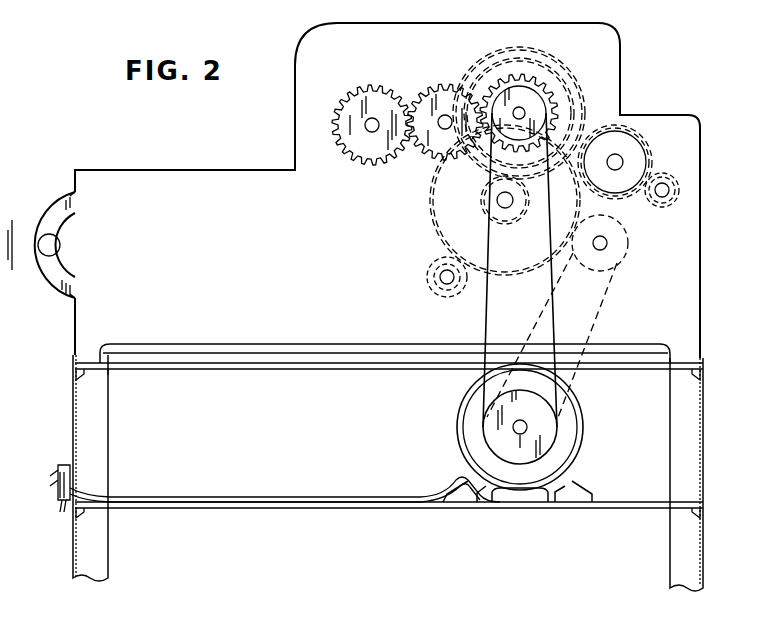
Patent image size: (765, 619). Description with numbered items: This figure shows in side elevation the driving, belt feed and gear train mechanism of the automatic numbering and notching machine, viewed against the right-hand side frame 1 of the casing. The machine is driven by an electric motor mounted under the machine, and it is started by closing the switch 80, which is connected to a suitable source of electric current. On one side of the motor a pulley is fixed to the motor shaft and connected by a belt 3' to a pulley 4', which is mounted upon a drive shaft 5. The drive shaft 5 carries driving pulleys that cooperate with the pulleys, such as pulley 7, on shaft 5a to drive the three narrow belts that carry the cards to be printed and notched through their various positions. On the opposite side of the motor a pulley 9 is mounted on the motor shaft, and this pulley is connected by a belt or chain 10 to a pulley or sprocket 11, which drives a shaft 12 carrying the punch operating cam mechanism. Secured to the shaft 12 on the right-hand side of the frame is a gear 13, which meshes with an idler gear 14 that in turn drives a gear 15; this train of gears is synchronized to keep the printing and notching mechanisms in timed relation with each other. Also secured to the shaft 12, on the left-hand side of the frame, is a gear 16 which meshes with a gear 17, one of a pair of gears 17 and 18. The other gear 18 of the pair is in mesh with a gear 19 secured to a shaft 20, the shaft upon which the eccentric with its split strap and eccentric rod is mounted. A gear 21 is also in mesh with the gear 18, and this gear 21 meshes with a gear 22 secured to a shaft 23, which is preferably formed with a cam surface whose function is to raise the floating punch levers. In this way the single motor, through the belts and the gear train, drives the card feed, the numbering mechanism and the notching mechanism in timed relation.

The right-hand side frame 1 is at (568, 419).
The belt 3' is at (565, 336).
The pulley 4' is at (616, 243).
The drive shaft 5 is at (608, 238).
The shaft 5a is at (60, 247).
The pulley 7 is at (22, 206).
The pulley 9 is at (492, 430).
The belt or chain 10 is at (488, 316).
The pulley or sprocket 11 is at (527, 88).
The shaft 12 is at (525, 113).
The gear 13 is at (494, 88).
The idler gear 14 is at (429, 90).
The gear 15 is at (370, 88).
The gear 16 is at (570, 74).
The gear 17 is at (492, 202).
The gear 18 is at (428, 205).
The gear 19 is at (430, 292).
The shaft 20 is at (438, 270).
The gear 21 is at (636, 134).
The gear 22 is at (667, 180).
The shaft 23 is at (670, 190).
The switch 80 is at (62, 465).